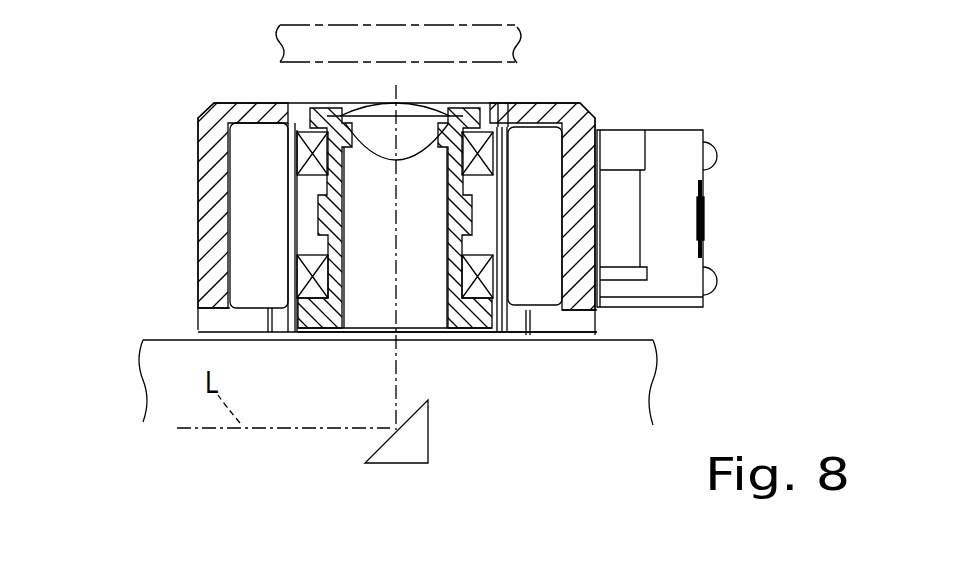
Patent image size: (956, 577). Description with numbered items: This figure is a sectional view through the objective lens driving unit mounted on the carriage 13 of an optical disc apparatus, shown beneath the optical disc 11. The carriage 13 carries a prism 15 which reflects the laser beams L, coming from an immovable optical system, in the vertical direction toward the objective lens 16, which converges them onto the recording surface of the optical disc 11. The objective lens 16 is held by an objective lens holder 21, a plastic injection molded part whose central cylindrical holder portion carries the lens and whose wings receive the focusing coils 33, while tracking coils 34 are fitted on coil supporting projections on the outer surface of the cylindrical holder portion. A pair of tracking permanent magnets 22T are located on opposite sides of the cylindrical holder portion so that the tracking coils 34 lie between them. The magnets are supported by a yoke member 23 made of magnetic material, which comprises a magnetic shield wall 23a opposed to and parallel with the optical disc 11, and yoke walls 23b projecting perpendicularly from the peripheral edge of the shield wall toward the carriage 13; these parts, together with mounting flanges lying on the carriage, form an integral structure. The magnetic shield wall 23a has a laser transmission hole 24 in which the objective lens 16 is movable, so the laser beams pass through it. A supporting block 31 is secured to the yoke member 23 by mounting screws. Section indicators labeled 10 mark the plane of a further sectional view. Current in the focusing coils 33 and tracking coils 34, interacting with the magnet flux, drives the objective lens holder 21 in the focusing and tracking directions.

The section line indicator 10 is at (100, 213).
The optical disc 11 is at (528, 42).
The carriage 13 is at (167, 350).
The prism 15 is at (427, 440).
The objective lens 16 is at (405, 150).
The objective lens holder 21 is at (459, 342).
The tracking permanent magnets 22T is at (560, 352).
The yoke member 23 is at (410, 185).
The magnetic shield wall 23a is at (235, 103).
The yoke walls 23b is at (205, 223).
The laser transmission hole 24 is at (497, 103).
The supporting block 31 is at (688, 218).
The focusing coils 33 is at (298, 157).
The tracking coils 34 is at (490, 157).